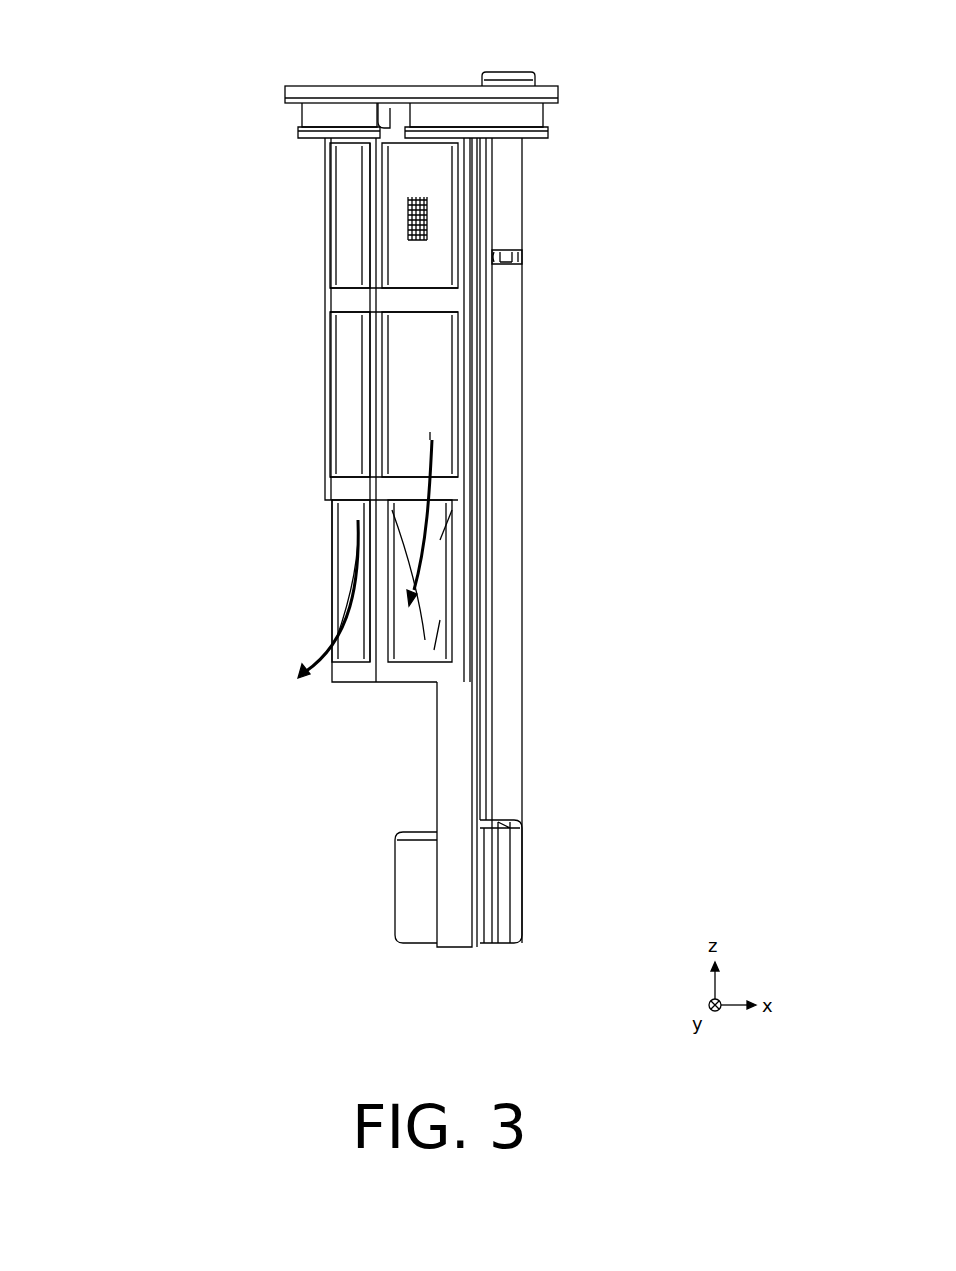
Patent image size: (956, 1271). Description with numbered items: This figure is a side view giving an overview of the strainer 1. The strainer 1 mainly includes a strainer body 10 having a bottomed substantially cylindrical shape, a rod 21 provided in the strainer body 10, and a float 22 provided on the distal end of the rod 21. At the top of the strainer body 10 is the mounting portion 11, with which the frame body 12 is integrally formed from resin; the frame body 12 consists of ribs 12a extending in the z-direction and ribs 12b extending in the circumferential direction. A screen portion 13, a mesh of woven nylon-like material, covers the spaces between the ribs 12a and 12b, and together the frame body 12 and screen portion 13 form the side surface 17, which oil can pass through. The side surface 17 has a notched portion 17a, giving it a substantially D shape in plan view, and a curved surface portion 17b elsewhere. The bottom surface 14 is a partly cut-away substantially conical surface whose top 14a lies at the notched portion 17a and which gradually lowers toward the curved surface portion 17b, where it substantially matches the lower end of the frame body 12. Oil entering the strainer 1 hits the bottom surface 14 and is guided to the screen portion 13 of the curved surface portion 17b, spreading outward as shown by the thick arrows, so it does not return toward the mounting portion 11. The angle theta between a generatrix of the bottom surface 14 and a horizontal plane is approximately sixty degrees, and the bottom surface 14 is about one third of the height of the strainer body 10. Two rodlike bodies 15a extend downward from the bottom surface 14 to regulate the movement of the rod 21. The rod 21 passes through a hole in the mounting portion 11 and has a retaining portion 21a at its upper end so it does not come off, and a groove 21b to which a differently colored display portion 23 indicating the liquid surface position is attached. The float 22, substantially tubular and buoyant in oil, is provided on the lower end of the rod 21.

The strainer 1 is at (604, 49).
The strainer body 10 is at (162, 410).
The mounting portion 11 is at (304, 122).
The frame body 12 is at (218, 308).
The rib 12a is at (374, 262).
The rib 12b is at (348, 300).
The screen portion 13 is at (404, 213).
The bottom surface 14 is at (414, 691).
The top 14a is at (446, 515).
The rodlike body 15a is at (438, 785).
The side surface 17 is at (162, 308).
The notched portion 17a is at (474, 410).
The curved surface portion 17b is at (332, 468).
The rod 21 is at (520, 751).
The retaining portion 21a is at (490, 63).
The groove 21b is at (518, 250).
The float 22 is at (416, 876).
The display portion 23 is at (506, 264).
The angle theta is at (346, 688).